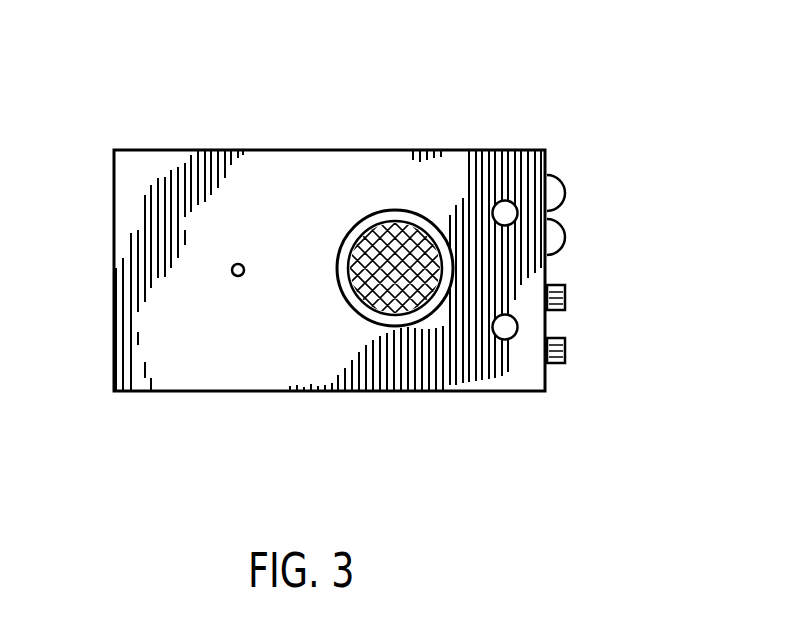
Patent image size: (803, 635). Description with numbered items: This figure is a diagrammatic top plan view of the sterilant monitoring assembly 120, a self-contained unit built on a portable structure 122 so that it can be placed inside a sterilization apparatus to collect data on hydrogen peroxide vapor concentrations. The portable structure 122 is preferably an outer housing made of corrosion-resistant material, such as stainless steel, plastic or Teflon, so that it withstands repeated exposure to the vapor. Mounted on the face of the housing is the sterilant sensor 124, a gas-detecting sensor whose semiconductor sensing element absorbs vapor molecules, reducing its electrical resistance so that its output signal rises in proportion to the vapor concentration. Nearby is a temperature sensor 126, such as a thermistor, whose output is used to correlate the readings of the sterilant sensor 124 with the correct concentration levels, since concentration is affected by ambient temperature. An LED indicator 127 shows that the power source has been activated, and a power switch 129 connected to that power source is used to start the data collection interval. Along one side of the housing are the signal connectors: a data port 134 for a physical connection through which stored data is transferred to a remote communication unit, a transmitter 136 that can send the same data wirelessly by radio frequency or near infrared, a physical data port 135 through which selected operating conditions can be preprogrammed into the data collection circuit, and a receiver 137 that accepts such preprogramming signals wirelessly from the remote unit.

The sterilant monitoring assembly 120 is at (361, 259).
The portable structure 122 is at (258, 452).
The sterilant sensor 124 is at (346, 233).
The temperature sensor 126 is at (231, 270).
The LED indicator 127 is at (497, 204).
The power switch 129 is at (483, 386).
The data port 134 is at (614, 364).
The physical data port 135 is at (630, 300).
The transmitter 136 is at (632, 230).
The receiver 137 is at (632, 163).